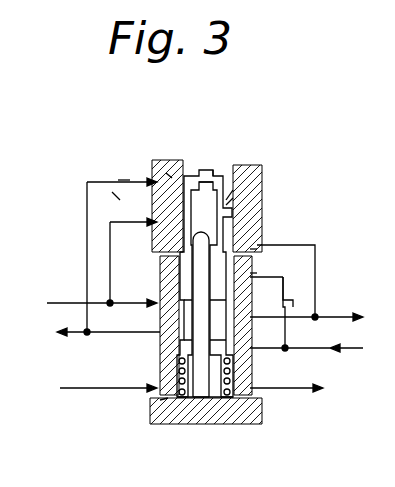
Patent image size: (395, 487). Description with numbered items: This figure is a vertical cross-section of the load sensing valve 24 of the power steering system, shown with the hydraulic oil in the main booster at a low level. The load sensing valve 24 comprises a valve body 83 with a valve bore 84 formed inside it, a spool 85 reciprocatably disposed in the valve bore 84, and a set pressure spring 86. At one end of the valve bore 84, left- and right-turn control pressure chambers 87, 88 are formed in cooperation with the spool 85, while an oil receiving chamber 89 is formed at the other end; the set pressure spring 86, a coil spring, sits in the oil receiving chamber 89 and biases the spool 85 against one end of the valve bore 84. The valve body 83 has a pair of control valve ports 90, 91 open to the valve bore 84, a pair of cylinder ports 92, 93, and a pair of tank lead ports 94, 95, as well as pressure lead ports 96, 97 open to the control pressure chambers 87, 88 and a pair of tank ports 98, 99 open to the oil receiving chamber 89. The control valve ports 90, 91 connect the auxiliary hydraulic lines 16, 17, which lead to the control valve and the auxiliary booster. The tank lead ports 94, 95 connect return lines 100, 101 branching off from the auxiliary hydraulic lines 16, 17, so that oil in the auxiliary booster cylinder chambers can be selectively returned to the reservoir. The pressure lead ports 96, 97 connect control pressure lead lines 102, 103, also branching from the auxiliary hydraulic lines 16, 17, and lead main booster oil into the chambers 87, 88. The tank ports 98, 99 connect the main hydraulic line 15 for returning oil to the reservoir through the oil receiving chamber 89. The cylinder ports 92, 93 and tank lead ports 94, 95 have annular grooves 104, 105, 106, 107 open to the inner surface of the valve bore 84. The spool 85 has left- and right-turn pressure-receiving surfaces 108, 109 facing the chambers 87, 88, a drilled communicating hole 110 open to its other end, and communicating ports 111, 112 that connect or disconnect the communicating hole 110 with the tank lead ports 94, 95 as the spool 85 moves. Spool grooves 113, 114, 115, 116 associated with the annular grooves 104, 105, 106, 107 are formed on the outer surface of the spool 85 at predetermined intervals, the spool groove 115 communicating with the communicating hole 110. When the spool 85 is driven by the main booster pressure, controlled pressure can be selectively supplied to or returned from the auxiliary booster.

The load sensing valve 24 is at (216, 110).
The main hydraulic line 15 is at (115, 392).
The auxiliary hydraulic line 16 is at (68, 305).
The auxiliary hydraulic line 17 is at (77, 338).
The valve body 83 is at (233, 190).
The valve bore 84 is at (233, 212).
The spool 85 is at (233, 198).
The set pressure spring 86 is at (177, 403).
The left-turn control pressure chamber 87 is at (112, 192).
The right-turn control pressure chamber 88 is at (196, 176).
The oil receiving chamber 89 is at (214, 403).
The control valve port 90 is at (116, 314).
The control valve port 91 is at (165, 338).
The cylinder port 92 is at (271, 292).
The cylinder port 93 is at (252, 345).
The tank lead port 94 is at (254, 249).
The tank lead port 95 is at (267, 270).
The pressure lead port 96 is at (183, 222).
The pressure lead port 97 is at (166, 173).
The tank port 98 is at (160, 400).
The tank port 99 is at (251, 400).
The return line 100 is at (316, 266).
The return line 101 is at (288, 293).
The control pressure lead line 102 is at (87, 182).
The control pressure lead line 103 is at (118, 180).
The annular groove 104 is at (255, 333).
The annular groove 105 is at (250, 380).
The annular groove 106 is at (250, 238).
The annular groove 107 is at (250, 256).
The left-turn pressure-receiving surface 108 is at (233, 224).
The right-turn pressure-receiving surface 109 is at (212, 172).
The communicating hole 110 is at (200, 400).
The communicating port 111 is at (183, 250).
The communicating port 112 is at (181, 282).
The spool groove 113 is at (165, 322).
The spool groove 114 is at (108, 376).
The spool groove 115 is at (183, 240).
The spool groove 116 is at (181, 262).